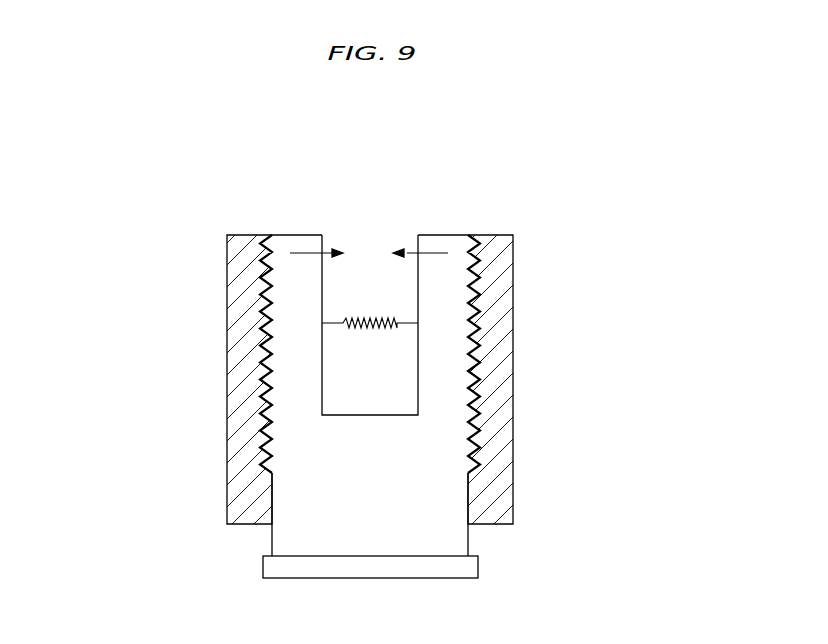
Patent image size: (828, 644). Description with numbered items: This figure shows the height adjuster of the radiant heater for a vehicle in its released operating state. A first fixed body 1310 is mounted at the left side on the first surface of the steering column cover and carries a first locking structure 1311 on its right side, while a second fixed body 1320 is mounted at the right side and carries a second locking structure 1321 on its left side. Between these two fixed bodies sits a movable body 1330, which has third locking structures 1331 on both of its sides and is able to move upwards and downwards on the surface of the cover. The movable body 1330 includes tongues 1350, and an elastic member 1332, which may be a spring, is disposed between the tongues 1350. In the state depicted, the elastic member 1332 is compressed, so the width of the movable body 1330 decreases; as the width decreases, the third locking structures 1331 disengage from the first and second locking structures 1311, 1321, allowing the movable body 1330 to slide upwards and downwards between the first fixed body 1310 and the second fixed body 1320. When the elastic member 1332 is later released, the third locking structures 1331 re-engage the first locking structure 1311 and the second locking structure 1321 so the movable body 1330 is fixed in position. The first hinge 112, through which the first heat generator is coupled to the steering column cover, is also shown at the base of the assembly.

The first hinge 112 is at (265, 564).
The first fixed body 1310 is at (234, 257).
The first locking structure 1311 is at (268, 289).
The second fixed body 1320 is at (507, 257).
The second locking structure 1321 is at (472, 288).
The movable body 1330 is at (313, 477).
The third locking structures 1331 is at (268, 343).
The elastic member 1332 is at (369, 318).
The tongues 1350 is at (428, 233).